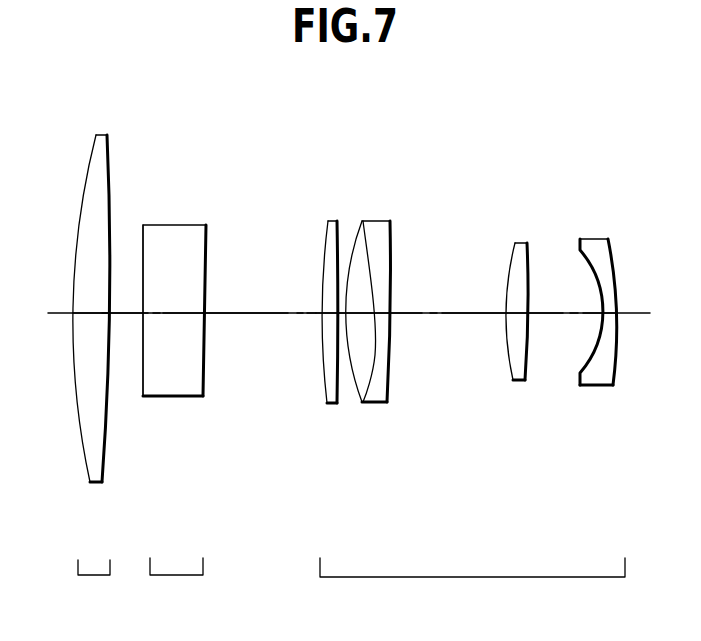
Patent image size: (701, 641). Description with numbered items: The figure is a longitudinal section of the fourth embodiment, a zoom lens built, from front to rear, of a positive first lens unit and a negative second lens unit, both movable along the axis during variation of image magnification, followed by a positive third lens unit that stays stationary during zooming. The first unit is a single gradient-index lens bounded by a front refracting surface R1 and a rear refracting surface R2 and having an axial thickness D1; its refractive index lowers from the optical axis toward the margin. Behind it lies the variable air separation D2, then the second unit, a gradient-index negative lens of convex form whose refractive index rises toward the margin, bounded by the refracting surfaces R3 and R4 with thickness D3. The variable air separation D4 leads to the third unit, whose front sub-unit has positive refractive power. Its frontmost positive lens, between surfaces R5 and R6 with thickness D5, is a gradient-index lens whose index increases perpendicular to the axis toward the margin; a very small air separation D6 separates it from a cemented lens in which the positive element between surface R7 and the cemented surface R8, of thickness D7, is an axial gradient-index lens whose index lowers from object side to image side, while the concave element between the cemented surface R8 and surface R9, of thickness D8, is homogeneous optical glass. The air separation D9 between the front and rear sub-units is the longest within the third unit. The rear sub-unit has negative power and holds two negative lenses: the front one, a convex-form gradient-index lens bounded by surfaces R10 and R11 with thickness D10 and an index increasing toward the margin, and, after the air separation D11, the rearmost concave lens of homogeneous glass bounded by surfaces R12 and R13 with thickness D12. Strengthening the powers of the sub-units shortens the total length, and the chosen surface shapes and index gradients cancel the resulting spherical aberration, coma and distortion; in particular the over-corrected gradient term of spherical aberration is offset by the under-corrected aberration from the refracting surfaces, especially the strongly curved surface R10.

The front refracting surface of first lens R1 is at (83, 172).
The rear refracting surface of first lens R2 is at (107, 162).
The front refracting surface of second lens R3 is at (138, 227).
The rear refracting surface of second lens R4 is at (208, 230).
The front refracting surface of frontmost lens of third unit R5 is at (327, 240).
The rear refracting surface of frontmost lens of third unit R6 is at (338, 233).
The front refracting surface of cemented positive lens R7 is at (357, 230).
The cemented surface R8 is at (367, 223).
The rear refracting surface of cemented concave lens R9 is at (390, 233).
The front refracting surface of front negative lens of rear sub-unit R10 is at (515, 257).
The rear refracting surface of front negative lens of rear sub-unit R11 is at (528, 253).
The front refracting surface of rearmost concave lens R12 is at (587, 260).
The rear refracting surface of rearmost concave lens R13 is at (613, 250).
The axial thickness of first lens D1 is at (93, 313).
The variable air separation between first and second units D2 is at (130, 313).
The axial thickness of second lens D3 is at (180, 313).
The variable air separation between second and third units D4 is at (282, 313).
The axial thickness of frontmost lens of third unit D5 is at (325, 313).
The air separation before cemented lens D6 is at (340, 313).
The axial thickness of cemented positive lens D7 is at (357, 313).
The axial thickness of cemented concave lens D8 is at (380, 313).
The air separation between front and rear sub-units D9 is at (457, 313).
The axial thickness of front negative lens of rear sub-unit D10 is at (520, 313).
The air separation between the two negative lenses of rear sub-unit D11 is at (562, 313).
The axial thickness of rearmost concave lens D12 is at (603, 313).